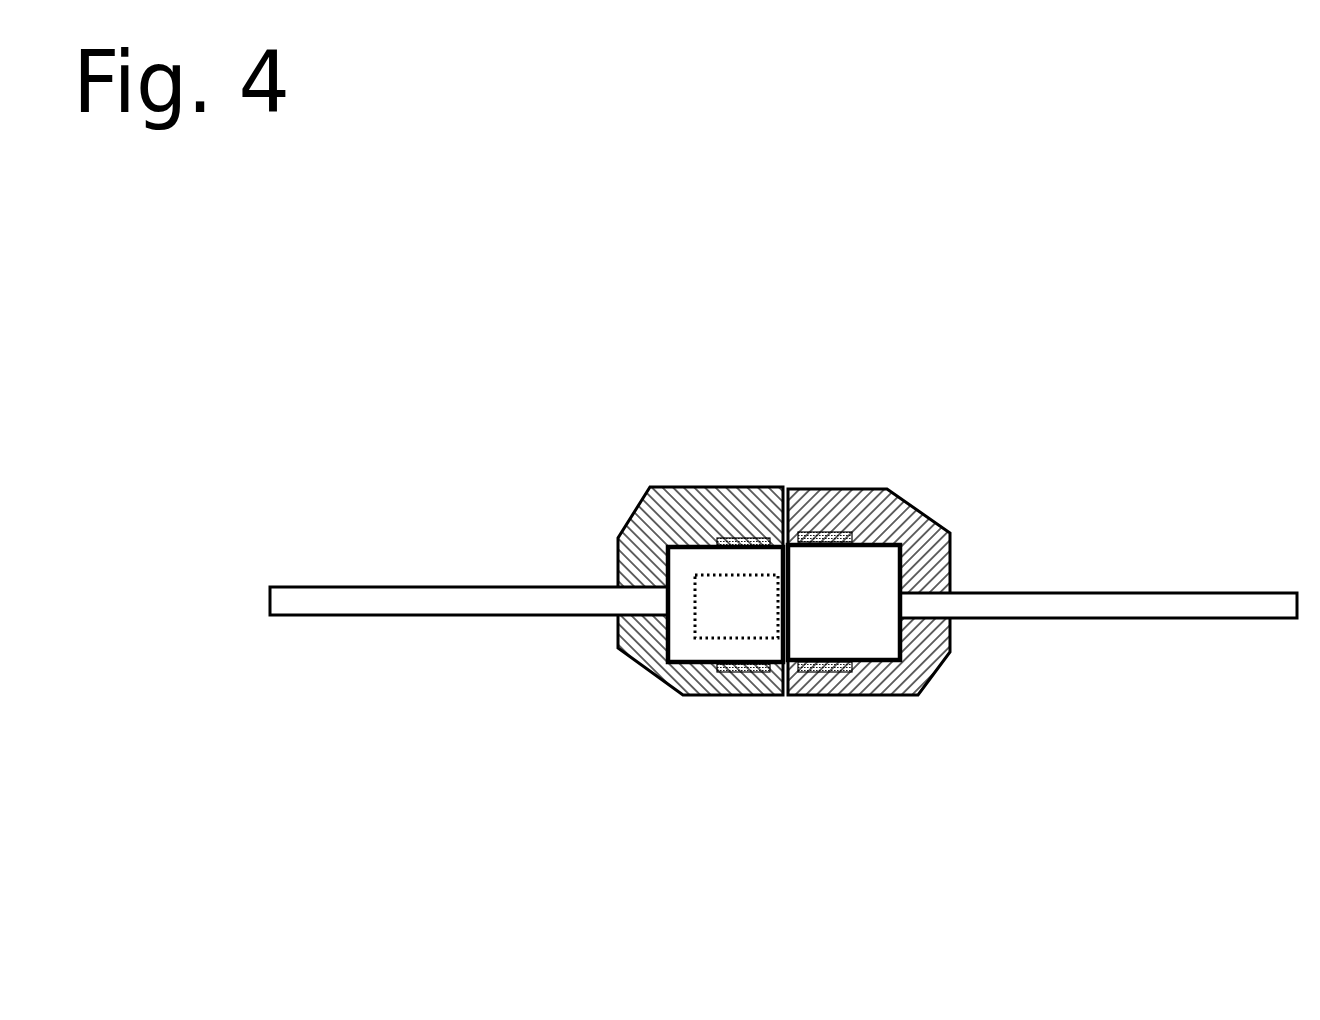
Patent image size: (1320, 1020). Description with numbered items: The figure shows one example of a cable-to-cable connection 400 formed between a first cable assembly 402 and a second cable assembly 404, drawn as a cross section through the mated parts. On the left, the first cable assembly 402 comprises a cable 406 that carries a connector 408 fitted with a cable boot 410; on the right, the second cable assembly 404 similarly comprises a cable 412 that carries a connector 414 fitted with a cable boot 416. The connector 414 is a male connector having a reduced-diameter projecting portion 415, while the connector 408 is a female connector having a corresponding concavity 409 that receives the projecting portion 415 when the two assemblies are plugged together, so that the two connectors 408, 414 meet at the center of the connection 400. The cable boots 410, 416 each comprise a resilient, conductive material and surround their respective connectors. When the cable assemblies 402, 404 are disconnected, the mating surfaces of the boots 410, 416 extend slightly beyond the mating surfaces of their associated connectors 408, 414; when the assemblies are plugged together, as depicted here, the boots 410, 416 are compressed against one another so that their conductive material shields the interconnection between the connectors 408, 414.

The cable-to-cable connection 400 is at (740, 288).
The first cable assembly 402 is at (507, 448).
The second cable assembly 404 is at (1077, 478).
The cable 406 is at (373, 602).
The connector 408 is at (687, 648).
The concavity 409 is at (722, 637).
The cable boot 410 is at (668, 505).
The cable 412 is at (1174, 608).
The connector 414 is at (873, 642).
The projecting portion 415 is at (743, 640).
The cable boot 416 is at (923, 540).